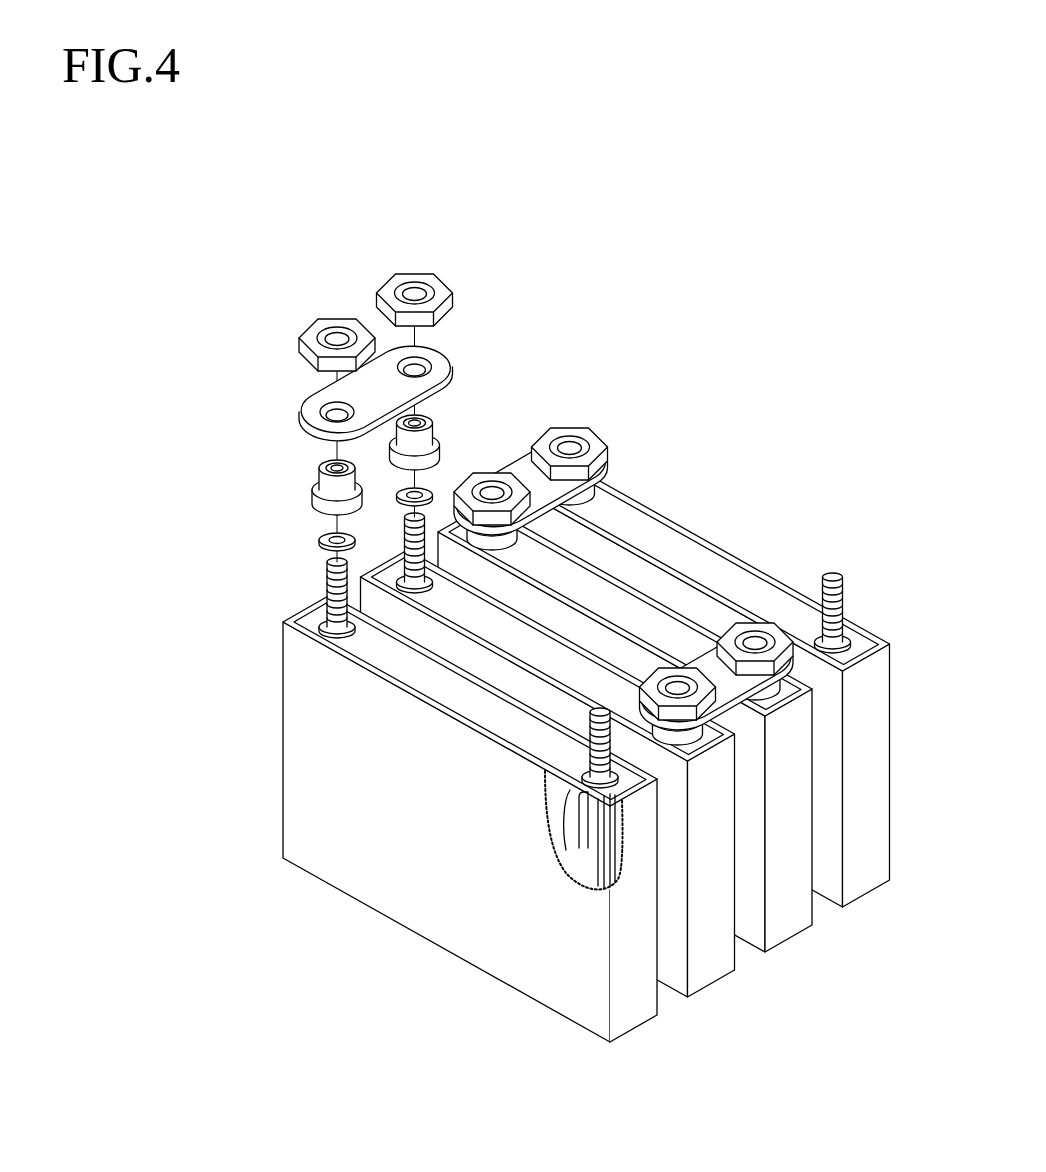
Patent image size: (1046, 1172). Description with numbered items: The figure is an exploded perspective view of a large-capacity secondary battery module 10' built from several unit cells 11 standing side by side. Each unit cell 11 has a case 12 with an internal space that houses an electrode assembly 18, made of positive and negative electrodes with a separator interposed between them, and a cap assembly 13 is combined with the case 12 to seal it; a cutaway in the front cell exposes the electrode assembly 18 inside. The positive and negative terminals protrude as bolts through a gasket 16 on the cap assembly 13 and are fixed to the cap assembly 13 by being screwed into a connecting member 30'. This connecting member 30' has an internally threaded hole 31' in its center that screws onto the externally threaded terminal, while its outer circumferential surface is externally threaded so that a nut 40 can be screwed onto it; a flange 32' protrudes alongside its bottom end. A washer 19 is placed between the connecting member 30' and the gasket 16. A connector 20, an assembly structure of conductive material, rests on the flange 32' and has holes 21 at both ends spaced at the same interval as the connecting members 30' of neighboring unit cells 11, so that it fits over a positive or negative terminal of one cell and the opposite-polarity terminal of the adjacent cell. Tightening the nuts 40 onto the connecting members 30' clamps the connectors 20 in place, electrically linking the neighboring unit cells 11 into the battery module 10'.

The battery module 10' is at (578, 763).
The unit cell 11 is at (578, 779).
The case 12 is at (370, 893).
The cap assembly 13 is at (420, 680).
The gasket 16 is at (283, 622).
The electrode assembly 18 is at (567, 840).
The washer 19 is at (325, 543).
The connector 20 is at (374, 389).
The hole 21 is at (330, 407).
The connecting member 30' is at (342, 479).
The internally threaded hole 31' is at (306, 464).
The flange 32' is at (314, 511).
The nut 40 is at (313, 330).